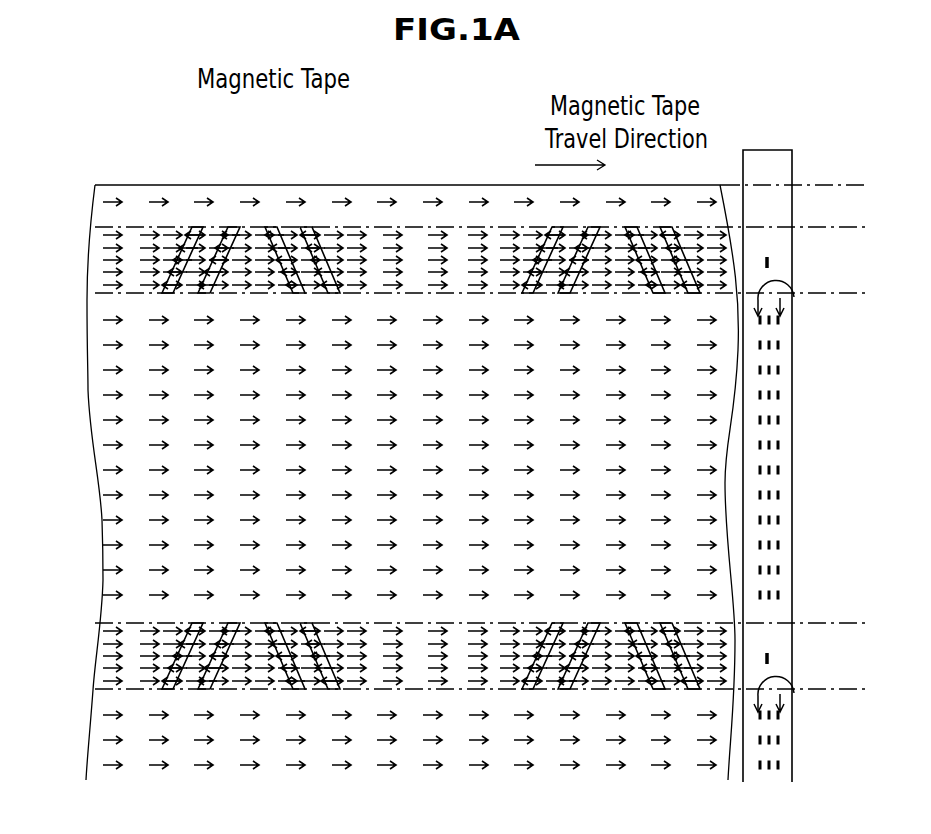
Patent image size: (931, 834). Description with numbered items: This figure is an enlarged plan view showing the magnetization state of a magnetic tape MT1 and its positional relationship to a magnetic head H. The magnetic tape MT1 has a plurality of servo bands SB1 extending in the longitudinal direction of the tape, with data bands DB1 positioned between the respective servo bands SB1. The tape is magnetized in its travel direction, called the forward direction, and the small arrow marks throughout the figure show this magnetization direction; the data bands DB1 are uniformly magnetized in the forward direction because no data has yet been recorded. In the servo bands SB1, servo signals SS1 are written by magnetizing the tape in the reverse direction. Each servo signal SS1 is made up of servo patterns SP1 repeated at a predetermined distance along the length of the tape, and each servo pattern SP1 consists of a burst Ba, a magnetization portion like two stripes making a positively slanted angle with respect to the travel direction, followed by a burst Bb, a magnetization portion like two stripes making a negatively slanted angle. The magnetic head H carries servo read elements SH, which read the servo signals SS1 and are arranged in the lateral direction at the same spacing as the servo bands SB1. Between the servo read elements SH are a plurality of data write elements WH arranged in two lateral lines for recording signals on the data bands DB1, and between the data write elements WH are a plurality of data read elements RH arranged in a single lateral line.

The magnetic tape MT1 is at (139, 185).
The servo pattern SP1 is at (330, 140).
The burst Ba is at (243, 226).
The burst Bb is at (350, 226).
The servo band SB1 is at (453, 226).
The magnetic head H is at (758, 150).
The servo signal SS1 is at (718, 248).
The servo read element SH is at (770, 262).
The data write element WH is at (794, 297).
The data band DB1 is at (725, 483).
The data read element RH is at (768, 608).